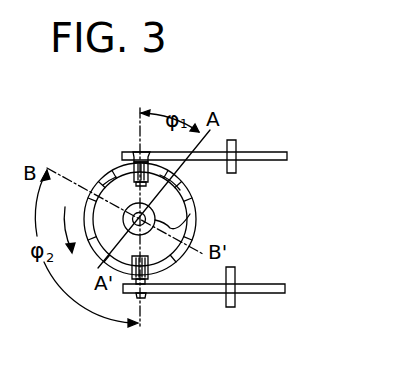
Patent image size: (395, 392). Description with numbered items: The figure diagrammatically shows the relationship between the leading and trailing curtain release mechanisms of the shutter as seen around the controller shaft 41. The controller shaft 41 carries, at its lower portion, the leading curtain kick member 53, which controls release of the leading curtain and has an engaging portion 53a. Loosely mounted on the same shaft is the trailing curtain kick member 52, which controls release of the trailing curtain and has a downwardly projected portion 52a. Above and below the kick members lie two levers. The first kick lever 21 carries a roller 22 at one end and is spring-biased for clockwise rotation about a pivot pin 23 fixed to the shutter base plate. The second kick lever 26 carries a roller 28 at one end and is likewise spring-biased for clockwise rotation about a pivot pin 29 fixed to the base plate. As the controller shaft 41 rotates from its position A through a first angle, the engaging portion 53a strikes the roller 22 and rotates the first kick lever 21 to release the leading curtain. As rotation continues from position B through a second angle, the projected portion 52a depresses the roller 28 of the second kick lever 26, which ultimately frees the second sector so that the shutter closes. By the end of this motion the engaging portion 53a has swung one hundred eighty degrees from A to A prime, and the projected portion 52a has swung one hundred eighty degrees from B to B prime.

The first kick lever 21 is at (270, 150).
The roller 22 is at (123, 162).
The pivot pin 23 is at (231, 140).
The second kick lever 26 is at (272, 285).
The roller 28 is at (150, 263).
The pivot pin 29 is at (231, 267).
The controller shaft 41 is at (160, 222).
The trailing curtain kick member 52 is at (100, 253).
The projected portion 52a is at (93, 188).
The leading curtain kick member 53 is at (191, 212).
The engaging portion 53a is at (178, 188).